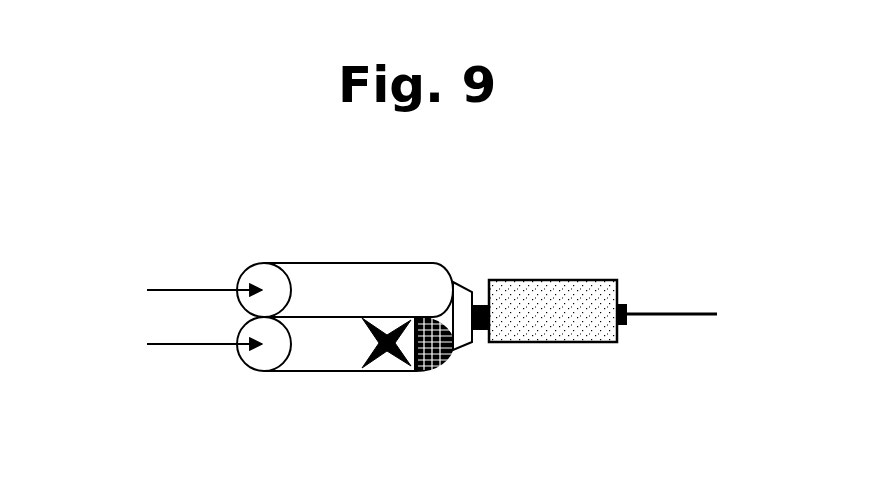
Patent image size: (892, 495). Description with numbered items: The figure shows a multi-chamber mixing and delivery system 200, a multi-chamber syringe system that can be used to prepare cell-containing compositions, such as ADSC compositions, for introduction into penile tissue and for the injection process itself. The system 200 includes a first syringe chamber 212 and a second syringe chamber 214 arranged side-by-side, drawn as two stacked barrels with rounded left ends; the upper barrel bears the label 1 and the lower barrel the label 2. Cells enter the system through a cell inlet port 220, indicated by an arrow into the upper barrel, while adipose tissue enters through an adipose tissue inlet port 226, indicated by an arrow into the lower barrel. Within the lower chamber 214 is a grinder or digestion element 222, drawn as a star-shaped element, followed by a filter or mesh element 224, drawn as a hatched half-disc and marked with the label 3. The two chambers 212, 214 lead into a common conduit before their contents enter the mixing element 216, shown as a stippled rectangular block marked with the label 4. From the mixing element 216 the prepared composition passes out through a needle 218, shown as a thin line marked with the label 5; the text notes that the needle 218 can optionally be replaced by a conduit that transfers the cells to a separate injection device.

The multi-chamber mixing and delivery system 200 is at (507, 209).
The first syringe chamber 212 is at (382, 262).
The second syringe chamber 214 is at (325, 372).
The mixing element 216 is at (558, 278).
The needle 218 is at (690, 317).
The cell inlet port 220 is at (252, 280).
The grinder or digestion element 222 is at (373, 367).
The filter or mesh element 224 is at (415, 356).
The adipose tissue inlet port 226 is at (252, 355).
The barrel 1 is at (342, 250).
The barrel 2 is at (391, 383).
The filter 3 is at (454, 373).
The chamber 4 is at (552, 313).
The needle 5 is at (671, 300).